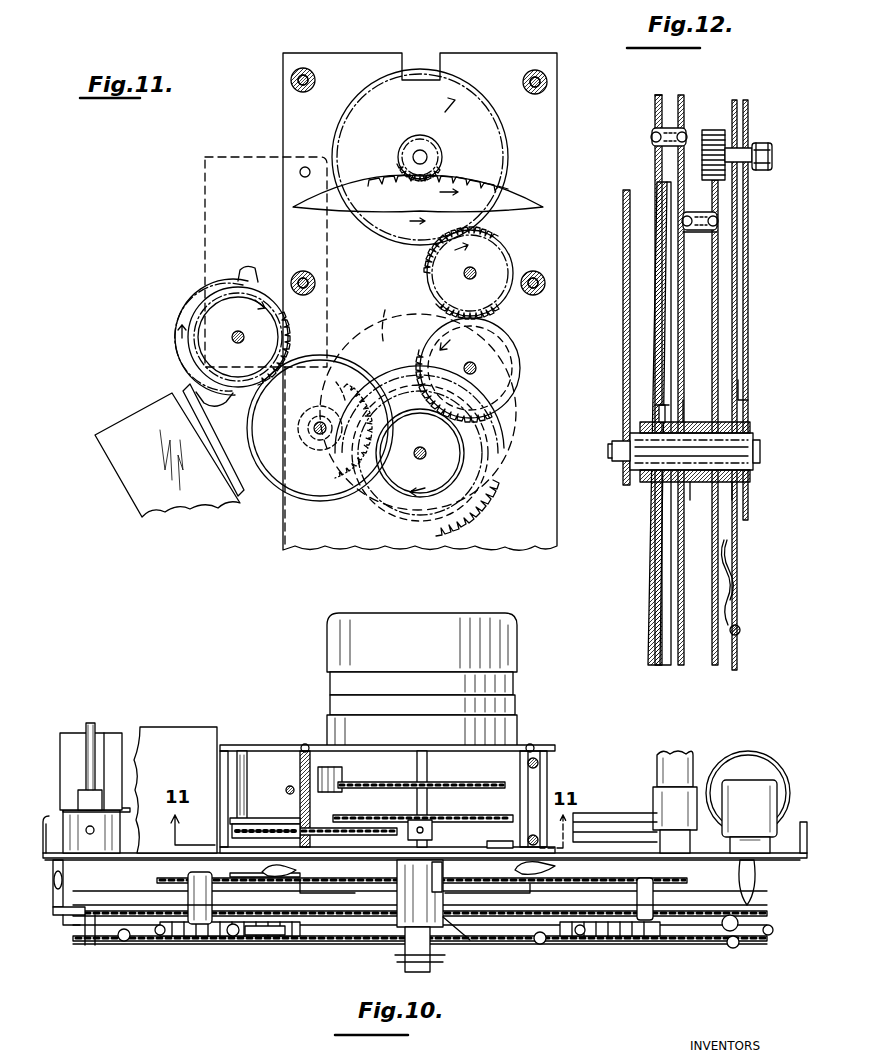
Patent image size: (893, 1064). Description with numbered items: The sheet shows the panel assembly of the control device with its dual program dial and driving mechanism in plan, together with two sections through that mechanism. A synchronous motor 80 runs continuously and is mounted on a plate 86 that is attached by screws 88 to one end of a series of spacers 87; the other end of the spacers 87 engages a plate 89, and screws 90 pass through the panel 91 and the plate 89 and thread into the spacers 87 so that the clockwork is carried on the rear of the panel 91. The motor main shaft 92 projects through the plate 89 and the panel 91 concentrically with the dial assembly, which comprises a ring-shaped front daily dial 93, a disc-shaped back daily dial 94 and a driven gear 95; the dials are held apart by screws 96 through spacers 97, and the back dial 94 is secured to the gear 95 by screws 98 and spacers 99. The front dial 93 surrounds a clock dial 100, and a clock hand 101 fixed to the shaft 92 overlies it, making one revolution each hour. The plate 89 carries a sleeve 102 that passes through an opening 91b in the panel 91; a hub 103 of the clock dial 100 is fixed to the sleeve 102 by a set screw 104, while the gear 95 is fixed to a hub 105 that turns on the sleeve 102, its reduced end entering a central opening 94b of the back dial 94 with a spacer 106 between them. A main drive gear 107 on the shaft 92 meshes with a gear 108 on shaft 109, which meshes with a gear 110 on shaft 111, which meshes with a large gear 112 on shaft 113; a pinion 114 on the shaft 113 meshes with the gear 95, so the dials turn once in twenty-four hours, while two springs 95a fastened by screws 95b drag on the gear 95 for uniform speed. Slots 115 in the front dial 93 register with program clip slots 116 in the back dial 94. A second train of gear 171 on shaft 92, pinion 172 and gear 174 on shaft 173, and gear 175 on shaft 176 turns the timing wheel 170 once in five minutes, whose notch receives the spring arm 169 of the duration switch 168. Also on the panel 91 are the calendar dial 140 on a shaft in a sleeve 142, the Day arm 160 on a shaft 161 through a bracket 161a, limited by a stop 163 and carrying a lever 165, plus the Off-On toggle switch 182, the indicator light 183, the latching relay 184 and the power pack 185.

In FIG. 11, the synchronous motor 80 is at (385, 310).
In FIG. 10, the synchronous motor 80 is at (517, 620).
In FIG. 11, the plate 86 is at (556, 76).
In FIG. 10, the plate 86 is at (547, 745).
In FIG. 11, the spacers 87 is at (313, 76).
In FIG. 10, the spacers 87 is at (540, 766).
In FIG. 10, the screws 88 is at (304, 744).
In FIG. 12, the plate 89 is at (748, 380).
In FIG. 10, the plate 89 is at (510, 841).
In FIG. 11, the screws 90 is at (309, 90).
In FIG. 10, the screws 90 is at (318, 876).
In FIG. 12, the panel 91 is at (733, 100).
In FIG. 10, the panel 91 is at (53, 865).
In FIG. 12, the opening 91b is at (748, 484).
In FIG. 11, the main shaft 92 is at (420, 447).
In FIG. 12, the main shaft 92 is at (760, 451).
In FIG. 10, the main shaft 92 is at (403, 940).
In FIG. 12, the front daily dial 93 is at (654, 122).
In FIG. 10, the front daily dial 93 is at (97, 945).
In FIG. 12, the back daily dial 94 is at (684, 95).
In FIG. 10, the back daily dial 94 is at (108, 898).
In FIG. 12, the central opening 94b is at (684, 424).
In FIG. 11, the driven gear 95 is at (500, 190).
In FIG. 12, the driven gear 95 is at (720, 205).
In FIG. 10, the driven gear 95 is at (165, 904).
In FIG. 12, the springs 95a is at (732, 560).
In FIG. 10, the springs 95a is at (546, 884).
In FIG. 12, the screws 95b is at (742, 630).
In FIG. 10, the screws 95b is at (487, 891).
In FIG. 12, the screws 96 is at (651, 137).
In FIG. 10, the screws 96 is at (126, 942).
In FIG. 12, the spacers 97 is at (658, 95).
In FIG. 10, the spacers 97 is at (160, 936).
In FIG. 12, the screws 98 is at (688, 214).
In FIG. 10, the screws 98 is at (213, 900).
In FIG. 12, the spacers 99 is at (700, 232).
In FIG. 10, the spacers 99 is at (188, 899).
In FIG. 12, the clock dial 100 is at (658, 190).
In FIG. 10, the clock dial 100 is at (320, 944).
In FIG. 12, the clock hand 101 is at (625, 196).
In FIG. 10, the clock hand 101 is at (430, 960).
In FIG. 12, the sleeve 102 is at (752, 428).
In FIG. 12, the hub 103 is at (643, 482).
In FIG. 10, the hub 103 is at (470, 940).
In FIG. 12, the set screw 104 is at (658, 412).
In FIG. 12, the hub 105 is at (750, 410).
In FIG. 12, the spacer 106 is at (692, 490).
In FIG. 10, the spacer 106 is at (446, 866).
In FIG. 11, the main drive gear 107 is at (416, 390).
In FIG. 11, the gear 108 is at (505, 336).
In FIG. 11, the shaft 109 is at (470, 362).
In FIG. 11, the gear 110 is at (485, 238).
In FIG. 11, the shaft 111 is at (470, 280).
In FIG. 11, the gear 112 is at (507, 140).
In FIG. 10, the gear 112 is at (490, 815).
In FIG. 11, the shaft 113 is at (418, 150).
In FIG. 12, the shaft 113 is at (761, 143).
In FIG. 10, the shaft 113 is at (428, 782).
In FIG. 11, the pinion 114 is at (441, 160).
In FIG. 12, the pinion 114 is at (712, 130).
In FIG. 10, the pinion 114 is at (400, 864).
In FIG. 10, the slots 115 is at (190, 936).
In FIG. 10, the program clip slots 116 is at (85, 945).
In FIG. 10, the calendar dial 140 is at (270, 936).
In FIG. 10, the sleeve 142 is at (261, 868).
In FIG. 10, the Day arm 160 is at (64, 925).
In FIG. 10, the shaft 161 is at (90, 723).
In FIG. 10, the bracket 161a is at (106, 733).
In FIG. 10, the stop 163 is at (53, 910).
In FIG. 10, the lever 165 is at (63, 812).
In FIG. 11, the duration switch 168 is at (157, 414).
In FIG. 11, the spring arm 169 is at (186, 386).
In FIG. 11, the timing wheel 170 is at (205, 282).
In FIG. 10, the timing wheel 170 is at (230, 820).
In FIG. 11, the gear 171 is at (486, 506).
In FIG. 10, the gear 171 is at (482, 782).
In FIG. 11, the pinion 172 is at (352, 424).
In FIG. 10, the pinion 172 is at (342, 775).
In FIG. 11, the shaft 173 is at (316, 436).
In FIG. 11, the gear 174 is at (226, 403).
In FIG. 10, the gear 174 is at (352, 828).
In FIG. 11, the gear 175 is at (256, 270).
In FIG. 10, the gear 175 is at (268, 824).
In FIG. 11, the shaft 176 is at (237, 331).
In FIG. 10, the shaft 176 is at (243, 751).
In FIG. 10, the Off-On toggle switch 182 is at (757, 878).
In FIG. 10, the indicator light 183 is at (700, 856).
In FIG. 10, the latching relay 184 is at (205, 727).
In FIG. 10, the power pack 185 is at (760, 752).